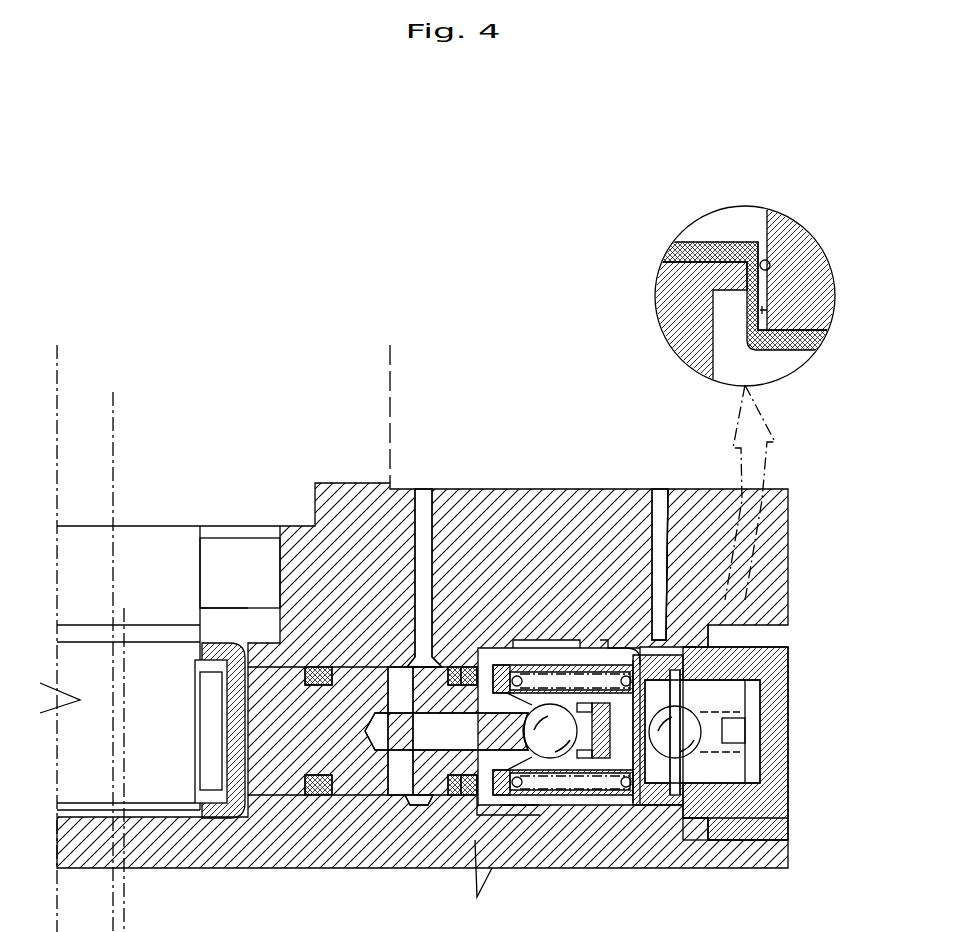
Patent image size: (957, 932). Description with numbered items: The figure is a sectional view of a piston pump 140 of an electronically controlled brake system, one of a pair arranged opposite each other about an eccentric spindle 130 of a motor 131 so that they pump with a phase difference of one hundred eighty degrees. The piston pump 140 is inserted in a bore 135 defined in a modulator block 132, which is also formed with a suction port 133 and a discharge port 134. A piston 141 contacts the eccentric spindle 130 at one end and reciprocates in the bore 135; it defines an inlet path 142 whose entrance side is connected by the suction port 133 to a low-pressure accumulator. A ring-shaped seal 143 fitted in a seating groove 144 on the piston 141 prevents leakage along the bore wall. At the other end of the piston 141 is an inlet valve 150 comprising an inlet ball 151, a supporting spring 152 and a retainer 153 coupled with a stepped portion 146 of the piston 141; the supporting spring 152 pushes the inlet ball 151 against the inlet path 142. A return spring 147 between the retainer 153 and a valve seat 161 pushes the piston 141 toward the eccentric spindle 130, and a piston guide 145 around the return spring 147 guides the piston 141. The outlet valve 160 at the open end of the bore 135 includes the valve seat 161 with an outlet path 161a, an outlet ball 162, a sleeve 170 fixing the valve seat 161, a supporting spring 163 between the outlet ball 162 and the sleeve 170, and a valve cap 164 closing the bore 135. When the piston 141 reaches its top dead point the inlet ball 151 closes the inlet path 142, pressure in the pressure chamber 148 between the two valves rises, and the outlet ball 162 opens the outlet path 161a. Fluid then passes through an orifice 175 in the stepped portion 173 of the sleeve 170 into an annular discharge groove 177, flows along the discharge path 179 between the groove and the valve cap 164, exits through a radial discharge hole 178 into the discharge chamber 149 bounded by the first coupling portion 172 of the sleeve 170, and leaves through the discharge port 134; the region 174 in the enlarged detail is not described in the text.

The eccentric spindle 130 is at (160, 797).
The motor 131 is at (393, 400).
The modulator block 132 is at (548, 483).
The suction port 133 is at (433, 517).
The discharge port 134 is at (669, 518).
The bore 135 is at (556, 800).
The piston pump 140 is at (452, 810).
The piston 141 is at (336, 792).
The inlet path 142 is at (415, 735).
The seal 143 is at (463, 666).
The seating groove 144 is at (473, 666).
The piston guide 145 is at (558, 717).
The stepped portion 146 is at (497, 667).
The return spring 147 is at (683, 506).
The pressure chamber 148 is at (641, 765).
The discharge chamber 149 is at (704, 625).
The inlet valve 150 is at (552, 759).
The inlet ball 151 is at (592, 706).
The supporting spring 152 is at (631, 666).
The retainer 153 is at (601, 696).
The outlet valve 160 is at (710, 795).
The valve seat 161 is at (700, 622).
The outlet path 161a is at (697, 660).
The outlet ball 162 is at (687, 713).
The supporting spring 163 is at (713, 755).
The valve cap 164 is at (730, 812).
The sleeve 170 is at (745, 765).
The first coupling portion 172 is at (708, 241).
The stepped portion 173 is at (772, 283).
The housing wall 174 is at (808, 322).
The orifice 175 is at (683, 800).
The discharge groove 177 is at (766, 310).
The discharge hole 178 is at (760, 243).
The discharge path 179 is at (776, 259).